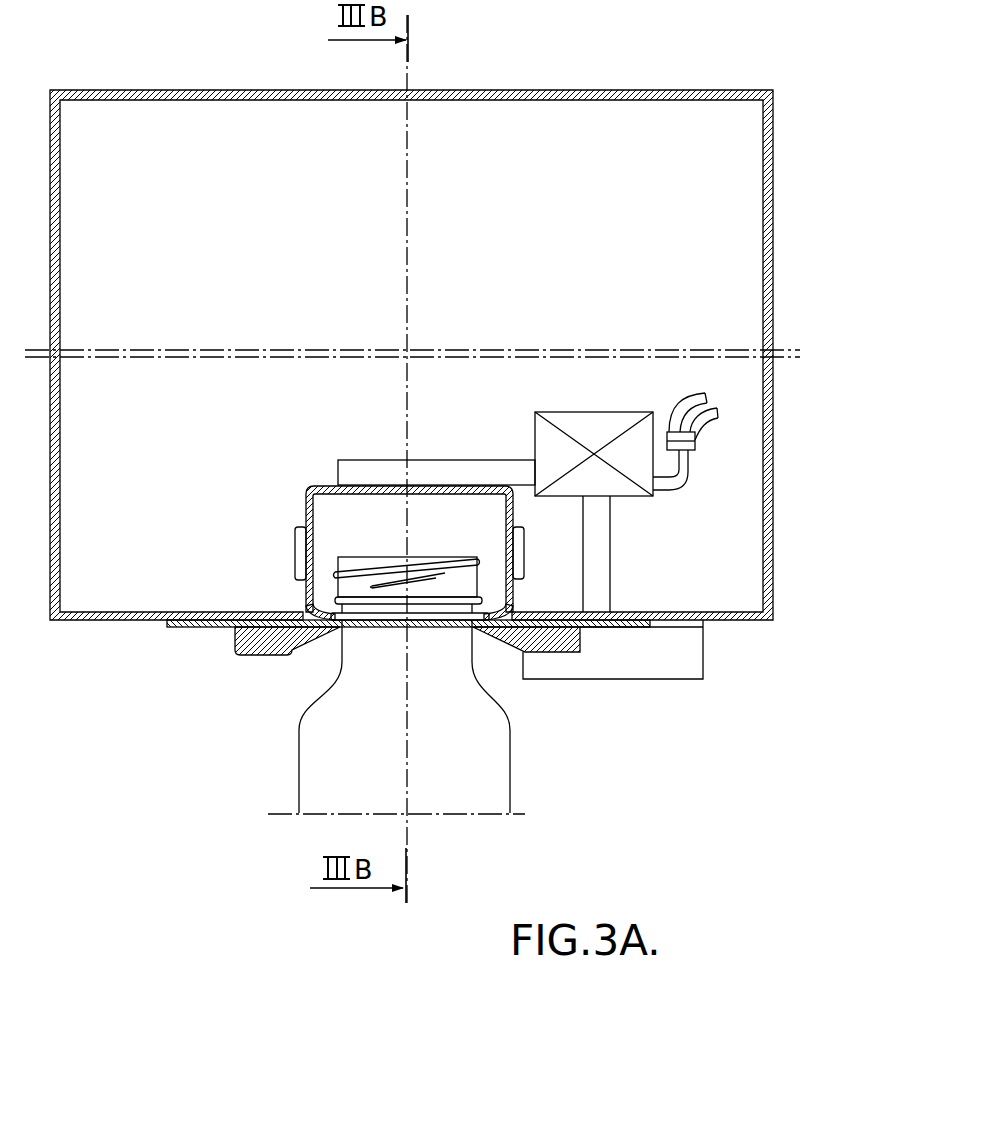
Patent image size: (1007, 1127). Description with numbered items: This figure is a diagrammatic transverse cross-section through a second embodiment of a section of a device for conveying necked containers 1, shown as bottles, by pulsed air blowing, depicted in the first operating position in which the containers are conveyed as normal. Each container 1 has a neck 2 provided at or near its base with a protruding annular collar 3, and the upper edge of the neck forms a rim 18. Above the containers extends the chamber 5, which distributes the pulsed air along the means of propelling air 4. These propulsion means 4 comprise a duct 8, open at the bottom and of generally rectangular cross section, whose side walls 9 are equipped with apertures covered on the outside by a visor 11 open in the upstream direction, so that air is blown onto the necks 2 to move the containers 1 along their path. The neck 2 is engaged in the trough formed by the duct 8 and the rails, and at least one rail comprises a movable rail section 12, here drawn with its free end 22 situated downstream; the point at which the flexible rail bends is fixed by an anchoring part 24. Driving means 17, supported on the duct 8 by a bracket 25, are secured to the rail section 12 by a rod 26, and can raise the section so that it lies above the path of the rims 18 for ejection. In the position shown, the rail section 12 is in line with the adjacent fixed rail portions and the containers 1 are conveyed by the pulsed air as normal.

The container 1 is at (290, 749).
The neck 2 is at (407, 551).
The protruding annular collar 3 is at (410, 597).
The means of propelling air 4 is at (423, 429).
The chamber 5 is at (588, 255).
The duct 8 is at (400, 518).
The side walls 9 is at (305, 505).
The visor 11 is at (297, 553).
The movable rail section 12 is at (537, 655).
The driving means 17 is at (570, 427).
The rim 18 is at (385, 555).
The free end 22 is at (565, 655).
The anchoring part 24 is at (672, 667).
The bracket 25 is at (452, 470).
The rod 26 is at (597, 571).